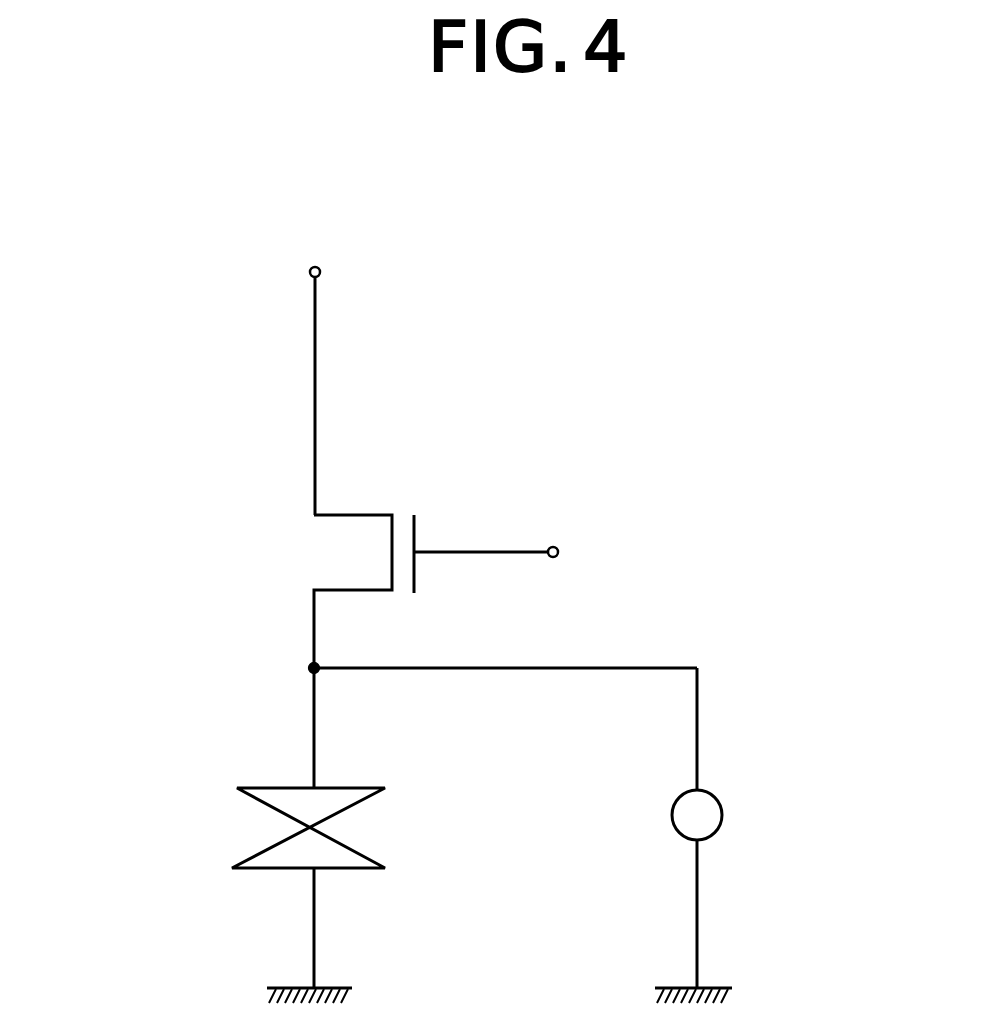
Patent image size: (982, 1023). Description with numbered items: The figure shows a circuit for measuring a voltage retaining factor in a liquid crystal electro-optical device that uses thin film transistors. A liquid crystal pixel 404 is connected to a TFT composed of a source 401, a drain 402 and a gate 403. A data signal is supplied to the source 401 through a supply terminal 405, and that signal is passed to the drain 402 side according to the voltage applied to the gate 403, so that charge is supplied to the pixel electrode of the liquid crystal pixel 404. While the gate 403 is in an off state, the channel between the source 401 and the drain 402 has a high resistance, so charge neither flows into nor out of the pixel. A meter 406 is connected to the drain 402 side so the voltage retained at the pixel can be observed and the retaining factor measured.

The source 401 is at (322, 420).
The drain 402 is at (302, 662).
The gate 403 is at (566, 543).
The liquid crystal pixel 404 is at (249, 800).
The supply terminal 405 is at (322, 270).
The voltmeter 406 is at (722, 800).